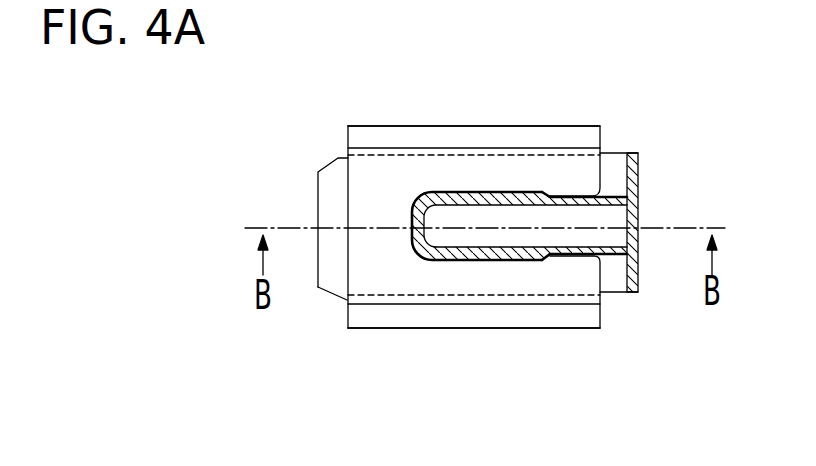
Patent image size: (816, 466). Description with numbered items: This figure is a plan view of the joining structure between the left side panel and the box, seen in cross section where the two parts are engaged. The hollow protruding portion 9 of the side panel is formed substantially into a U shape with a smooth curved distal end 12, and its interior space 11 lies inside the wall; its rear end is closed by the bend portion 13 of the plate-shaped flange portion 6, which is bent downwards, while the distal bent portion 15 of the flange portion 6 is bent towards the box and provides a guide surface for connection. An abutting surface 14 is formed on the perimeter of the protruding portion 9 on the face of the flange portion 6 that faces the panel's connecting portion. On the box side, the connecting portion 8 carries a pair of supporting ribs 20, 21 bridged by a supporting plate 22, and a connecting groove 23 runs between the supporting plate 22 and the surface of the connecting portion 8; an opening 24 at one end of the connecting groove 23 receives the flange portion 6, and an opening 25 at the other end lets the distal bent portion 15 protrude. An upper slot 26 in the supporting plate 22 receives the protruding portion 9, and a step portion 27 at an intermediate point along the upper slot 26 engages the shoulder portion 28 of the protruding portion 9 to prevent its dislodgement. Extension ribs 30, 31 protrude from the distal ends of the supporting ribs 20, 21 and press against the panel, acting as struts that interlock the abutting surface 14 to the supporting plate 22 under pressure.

The plate-shaped flange portion 6 is at (296, 179).
The connecting portion 8 is at (566, 107).
The hollow protruding portion 9 is at (478, 261).
The interior space 11 is at (489, 222).
The closed end of tube 12 is at (410, 230).
The bend portion 13 is at (638, 177).
The abutting surface 14 is at (437, 175).
The distal bent portion 15 is at (333, 178).
The supporting rib 20 is at (387, 120).
The supporting rib 21 is at (420, 337).
The supporting plate 22 is at (370, 199).
The connecting groove 23 is at (538, 158).
The opening 24 is at (612, 274).
The opening 25 is at (342, 280).
The upper slot 26 is at (524, 252).
The step portion 27 is at (543, 254).
The shoulder portion 28 is at (549, 193).
The extension rib 30 is at (518, 138).
The extension rib 31 is at (504, 318).